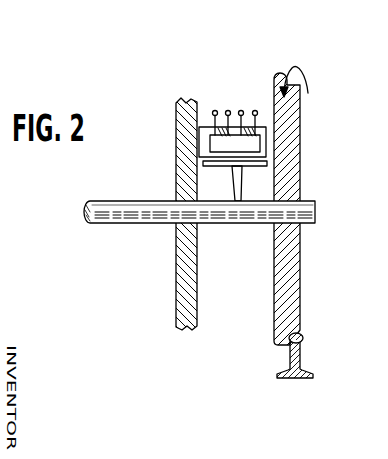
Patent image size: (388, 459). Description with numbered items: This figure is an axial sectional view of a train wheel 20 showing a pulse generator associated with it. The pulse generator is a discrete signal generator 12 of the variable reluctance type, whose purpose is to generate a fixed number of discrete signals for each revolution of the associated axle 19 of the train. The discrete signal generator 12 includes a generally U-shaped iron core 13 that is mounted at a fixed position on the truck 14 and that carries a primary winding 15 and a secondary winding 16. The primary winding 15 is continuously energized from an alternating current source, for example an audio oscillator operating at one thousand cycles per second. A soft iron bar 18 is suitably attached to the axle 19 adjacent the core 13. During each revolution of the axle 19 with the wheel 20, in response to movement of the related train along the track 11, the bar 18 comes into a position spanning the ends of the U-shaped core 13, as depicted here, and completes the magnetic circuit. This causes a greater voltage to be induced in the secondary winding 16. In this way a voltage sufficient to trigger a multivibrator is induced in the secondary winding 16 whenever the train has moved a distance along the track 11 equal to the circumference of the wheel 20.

The track 11 is at (292, 361).
The discrete signal generator 12 is at (264, 121).
The U-shaped iron core 13 is at (262, 138).
The truck 14 is at (180, 152).
The primary winding 15 is at (228, 110).
The secondary winding 16 is at (255, 110).
The soft iron bar 18 is at (267, 166).
The axle 19 is at (138, 213).
The wheel 20 is at (297, 273).